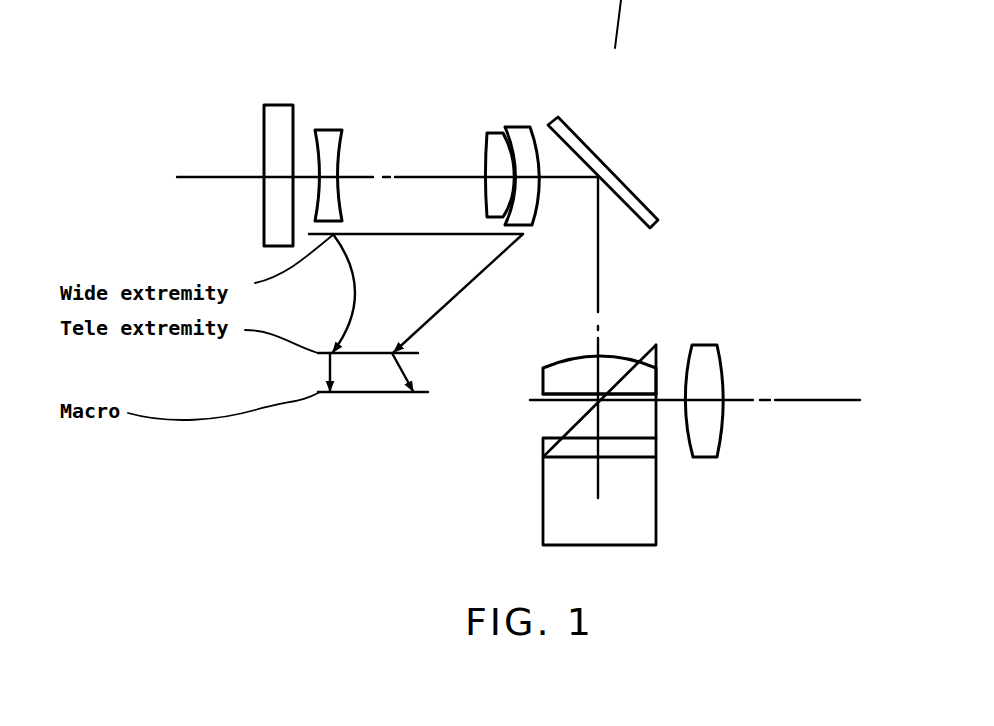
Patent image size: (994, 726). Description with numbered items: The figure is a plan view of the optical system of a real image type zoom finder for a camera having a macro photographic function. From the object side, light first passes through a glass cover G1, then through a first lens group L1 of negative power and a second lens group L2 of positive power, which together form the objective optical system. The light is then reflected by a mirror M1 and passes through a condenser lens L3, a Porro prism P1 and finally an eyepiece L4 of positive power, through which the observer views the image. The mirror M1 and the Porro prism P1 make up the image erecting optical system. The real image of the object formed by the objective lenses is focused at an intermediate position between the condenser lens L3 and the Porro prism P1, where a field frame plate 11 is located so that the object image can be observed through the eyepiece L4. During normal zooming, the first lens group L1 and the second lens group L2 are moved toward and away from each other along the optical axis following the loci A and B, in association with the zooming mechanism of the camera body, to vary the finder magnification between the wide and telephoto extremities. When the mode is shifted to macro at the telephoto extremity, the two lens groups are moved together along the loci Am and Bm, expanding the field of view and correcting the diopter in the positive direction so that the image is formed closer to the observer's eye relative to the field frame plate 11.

The glass cover G1 is at (262, 111).
The first lens group L1 is at (322, 127).
The second lens group L2 is at (513, 123).
The mirror M1 is at (631, 175).
The condenser lens L3 is at (624, 356).
The eyepiece L4 is at (700, 468).
The field frame plate 11 is at (547, 399).
The Porro prism P1 is at (540, 507).
The locus A is at (333, 293).
The locus B is at (458, 293).
The locus Am is at (329, 368).
The locus Bm is at (405, 369).